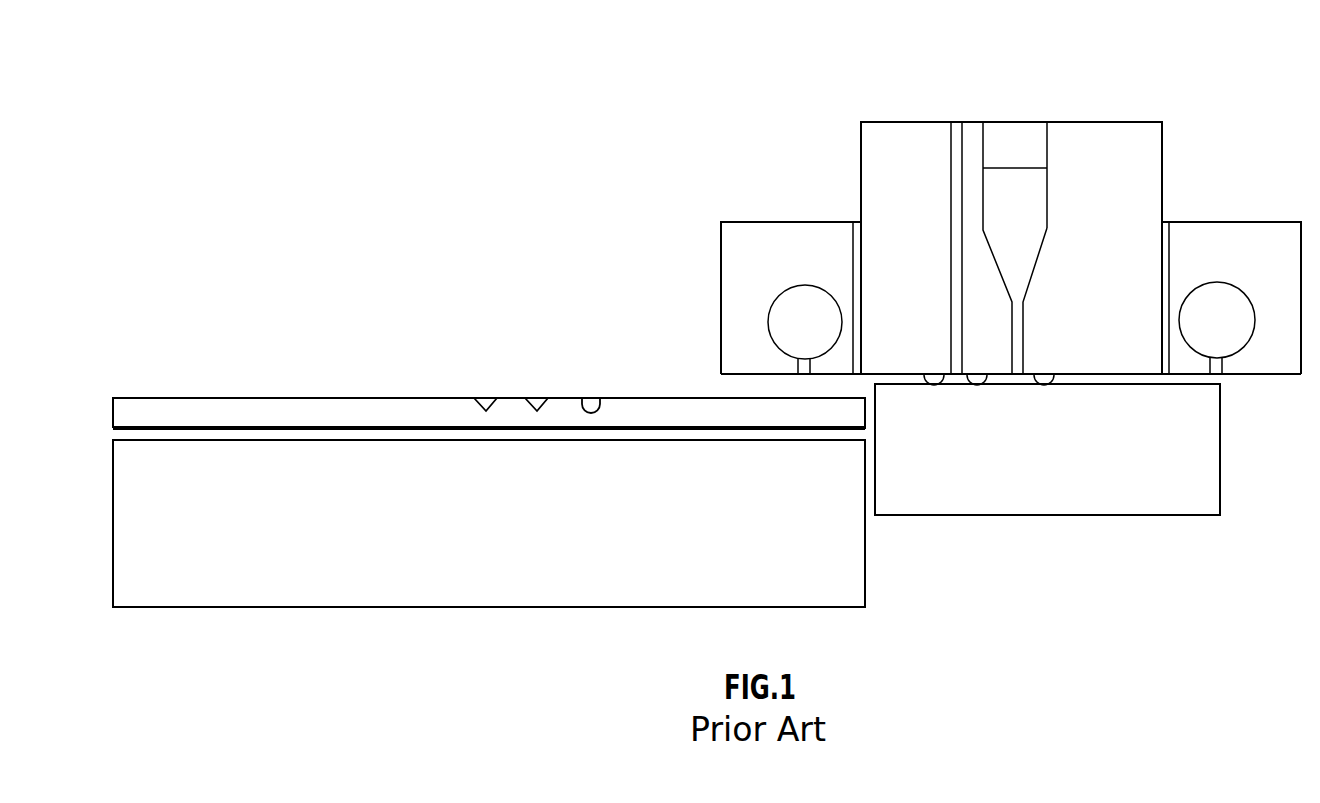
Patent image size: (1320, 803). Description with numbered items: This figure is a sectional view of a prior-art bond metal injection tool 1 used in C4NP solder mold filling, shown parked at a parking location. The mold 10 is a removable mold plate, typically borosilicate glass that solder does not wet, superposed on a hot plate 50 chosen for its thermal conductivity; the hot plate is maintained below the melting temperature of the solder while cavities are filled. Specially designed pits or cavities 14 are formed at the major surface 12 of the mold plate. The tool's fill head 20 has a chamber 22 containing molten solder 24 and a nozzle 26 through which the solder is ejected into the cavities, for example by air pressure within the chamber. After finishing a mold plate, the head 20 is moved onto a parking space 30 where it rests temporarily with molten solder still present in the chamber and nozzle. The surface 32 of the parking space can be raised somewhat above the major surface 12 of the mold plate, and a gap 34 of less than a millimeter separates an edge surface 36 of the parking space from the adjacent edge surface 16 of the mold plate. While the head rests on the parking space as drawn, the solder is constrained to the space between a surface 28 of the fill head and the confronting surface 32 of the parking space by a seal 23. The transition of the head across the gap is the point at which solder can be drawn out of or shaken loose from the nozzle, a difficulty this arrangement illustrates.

The bond metal injection tool 1 is at (1148, 92).
The mold 10 is at (113, 406).
The major surface 12 is at (616, 398).
The cavities 14 is at (485, 398).
The edge surface 16 is at (865, 410).
The fill head 20 is at (875, 170).
The chamber 22 is at (1027, 193).
The seal 23 is at (1046, 380).
The molten solder 24 is at (1035, 219).
The nozzle 26 is at (1023, 358).
The surface of the fill head 28 is at (904, 372).
The parking space 30 is at (1177, 502).
The surface of the parking space 32 is at (912, 384).
The gap 34 is at (866, 390).
The edge surface of the parking space 36 is at (875, 412).
The hot plate 50 is at (419, 554).